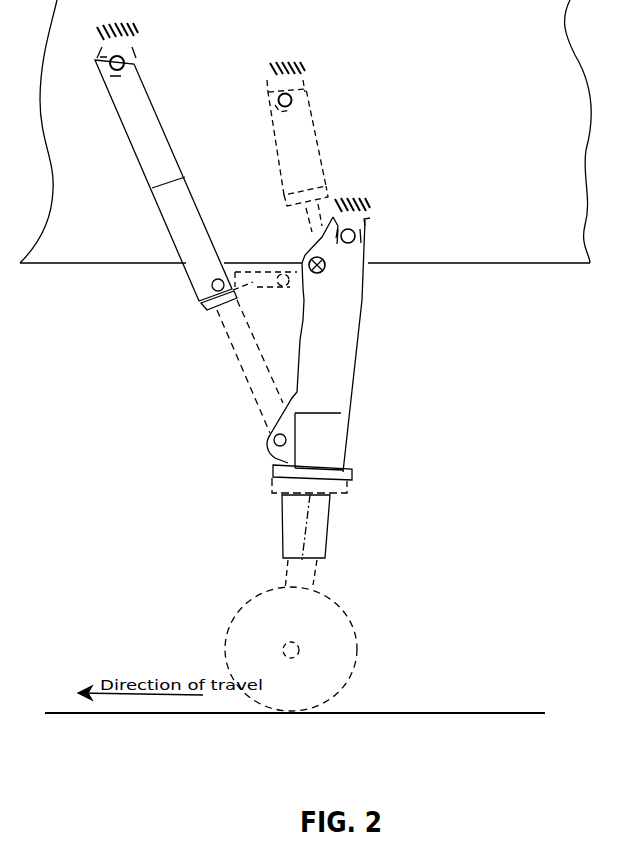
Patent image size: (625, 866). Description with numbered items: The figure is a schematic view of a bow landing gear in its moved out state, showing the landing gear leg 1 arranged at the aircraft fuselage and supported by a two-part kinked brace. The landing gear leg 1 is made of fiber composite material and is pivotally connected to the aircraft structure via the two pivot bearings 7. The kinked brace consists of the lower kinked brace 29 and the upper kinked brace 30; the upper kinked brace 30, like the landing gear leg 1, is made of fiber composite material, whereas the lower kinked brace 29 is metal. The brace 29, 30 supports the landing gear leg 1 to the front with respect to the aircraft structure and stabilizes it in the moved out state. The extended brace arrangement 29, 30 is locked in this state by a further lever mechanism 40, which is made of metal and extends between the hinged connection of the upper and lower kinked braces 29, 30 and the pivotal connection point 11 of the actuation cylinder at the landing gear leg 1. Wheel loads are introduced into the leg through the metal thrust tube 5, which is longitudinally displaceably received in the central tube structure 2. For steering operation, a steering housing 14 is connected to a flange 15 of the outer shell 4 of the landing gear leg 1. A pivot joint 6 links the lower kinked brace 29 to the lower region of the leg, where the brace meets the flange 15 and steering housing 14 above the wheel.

The landing gear leg 1 is at (348, 307).
The central tube structure 2 is at (317, 527).
The outer shell 4 is at (340, 357).
The thrust tube 5 is at (307, 578).
The pivot joint 6 is at (286, 434).
The pivot bearings 7 is at (360, 238).
The pivotal connection point 11 is at (327, 263).
The steering housing 14 is at (335, 487).
The flange 15 is at (353, 468).
The lower kinked brace 29 is at (243, 350).
The upper kinked brace 30 is at (182, 213).
The lever mechanism 40 is at (240, 296).